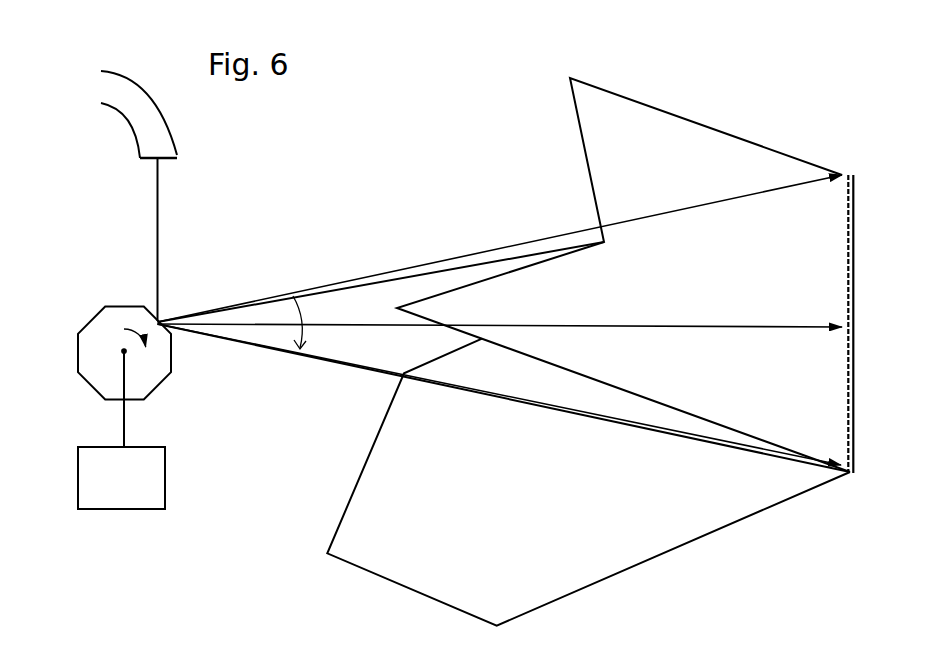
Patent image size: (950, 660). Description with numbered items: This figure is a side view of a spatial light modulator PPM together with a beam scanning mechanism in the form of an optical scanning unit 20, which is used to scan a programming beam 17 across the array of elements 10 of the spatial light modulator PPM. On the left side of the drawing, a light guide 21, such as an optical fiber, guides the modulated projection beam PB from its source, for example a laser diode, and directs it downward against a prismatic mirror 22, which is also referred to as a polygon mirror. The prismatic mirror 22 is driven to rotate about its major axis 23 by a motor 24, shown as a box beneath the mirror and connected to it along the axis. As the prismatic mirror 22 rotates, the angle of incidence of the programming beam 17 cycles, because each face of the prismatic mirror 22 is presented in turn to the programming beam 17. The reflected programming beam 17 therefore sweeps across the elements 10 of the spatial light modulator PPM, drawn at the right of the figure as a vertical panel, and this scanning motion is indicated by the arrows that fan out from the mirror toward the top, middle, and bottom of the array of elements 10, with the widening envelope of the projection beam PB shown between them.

The array of elements 10 is at (854, 268).
The programming beam 17 is at (500, 320).
The optical scanning unit 20 is at (278, 208).
The light guide 21 is at (178, 156).
The prismatic mirror 22 is at (157, 382).
The major axis 23 is at (122, 352).
The motor 24 is at (164, 478).
The modulated projection beam PB is at (705, 130).
The spatial light modulator PPM is at (884, 301).